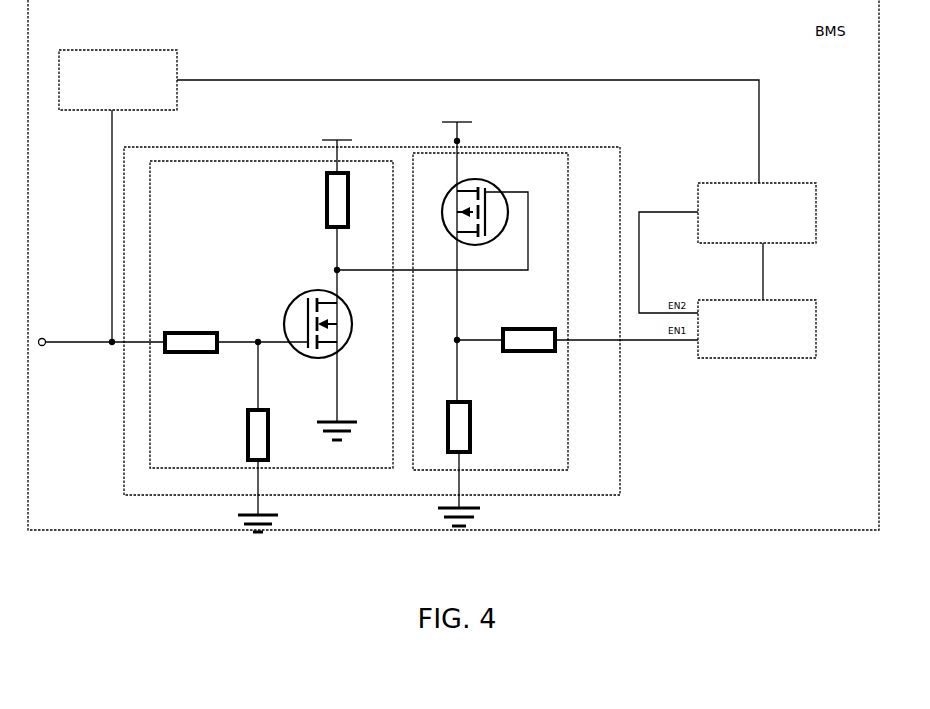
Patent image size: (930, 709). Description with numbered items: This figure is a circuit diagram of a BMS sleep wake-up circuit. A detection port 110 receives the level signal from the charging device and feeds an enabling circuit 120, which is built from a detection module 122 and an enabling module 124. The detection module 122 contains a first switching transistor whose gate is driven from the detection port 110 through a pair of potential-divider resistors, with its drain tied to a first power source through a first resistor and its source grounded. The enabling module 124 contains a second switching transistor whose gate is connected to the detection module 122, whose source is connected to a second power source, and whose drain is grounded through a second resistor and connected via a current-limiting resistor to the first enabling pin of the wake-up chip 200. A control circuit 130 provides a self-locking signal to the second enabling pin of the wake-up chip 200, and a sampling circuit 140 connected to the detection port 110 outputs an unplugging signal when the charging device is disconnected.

The detection port 110 is at (45, 337).
The enabling circuit 120 is at (620, 147).
The detection module 122 is at (230, 161).
The enabling module 124 is at (518, 153).
The control circuit 130 is at (795, 183).
The sampling circuit 140 is at (128, 50).
The wake-up chip 200 is at (795, 300).